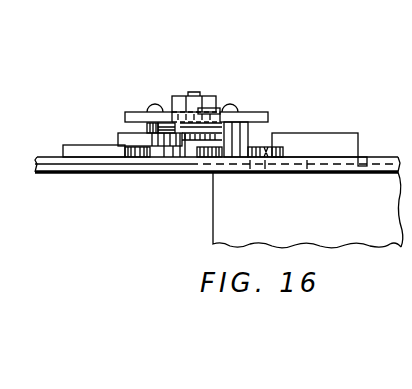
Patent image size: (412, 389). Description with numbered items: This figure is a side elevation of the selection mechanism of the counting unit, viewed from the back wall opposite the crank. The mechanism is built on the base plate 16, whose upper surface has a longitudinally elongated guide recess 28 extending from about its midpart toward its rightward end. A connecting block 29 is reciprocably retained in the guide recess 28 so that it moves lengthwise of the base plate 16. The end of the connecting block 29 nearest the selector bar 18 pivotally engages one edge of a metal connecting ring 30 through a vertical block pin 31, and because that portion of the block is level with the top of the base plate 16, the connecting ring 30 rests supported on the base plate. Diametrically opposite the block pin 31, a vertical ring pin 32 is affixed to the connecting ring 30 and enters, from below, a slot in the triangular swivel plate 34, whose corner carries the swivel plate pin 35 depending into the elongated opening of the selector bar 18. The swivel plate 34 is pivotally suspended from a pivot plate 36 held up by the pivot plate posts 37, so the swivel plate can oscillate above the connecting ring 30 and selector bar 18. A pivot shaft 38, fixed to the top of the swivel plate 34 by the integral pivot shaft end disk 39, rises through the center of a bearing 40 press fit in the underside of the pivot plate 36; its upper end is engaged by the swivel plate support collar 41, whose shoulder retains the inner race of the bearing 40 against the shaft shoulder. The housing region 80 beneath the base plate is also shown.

The base plate 16 is at (385, 164).
The selector bar 18 is at (72, 150).
The guide recess 28 is at (362, 157).
The connecting block 29 is at (310, 143).
The connecting ring 30 is at (217, 152).
The vertical block pin 31 is at (266, 160).
The vertical ring pin 32 is at (224, 123).
The triangular swivel plate 34 is at (175, 152).
The swivel plate pin 35 is at (133, 152).
The pivot plate 36 is at (125, 117).
The pivot plate posts 37 is at (145, 119).
The pivot shaft 38 is at (195, 95).
The pivot shaft end disk 39 is at (188, 150).
The bearing 40 is at (172, 112).
The swivel plate support collar 41 is at (208, 108).
The housing 80 is at (325, 211).